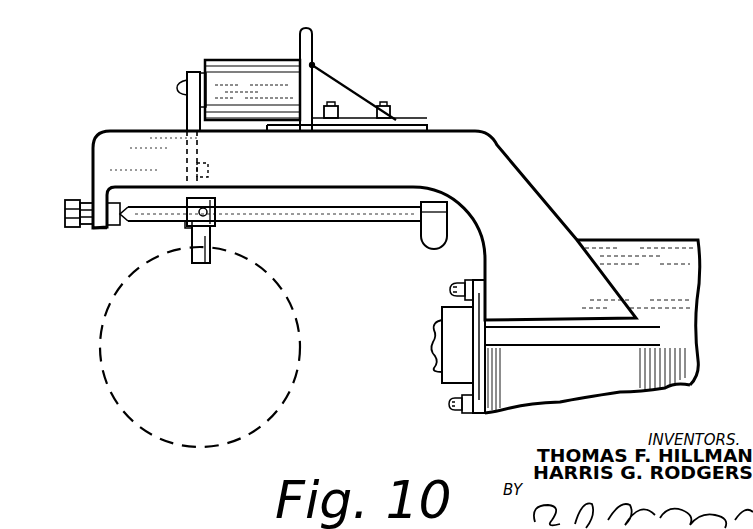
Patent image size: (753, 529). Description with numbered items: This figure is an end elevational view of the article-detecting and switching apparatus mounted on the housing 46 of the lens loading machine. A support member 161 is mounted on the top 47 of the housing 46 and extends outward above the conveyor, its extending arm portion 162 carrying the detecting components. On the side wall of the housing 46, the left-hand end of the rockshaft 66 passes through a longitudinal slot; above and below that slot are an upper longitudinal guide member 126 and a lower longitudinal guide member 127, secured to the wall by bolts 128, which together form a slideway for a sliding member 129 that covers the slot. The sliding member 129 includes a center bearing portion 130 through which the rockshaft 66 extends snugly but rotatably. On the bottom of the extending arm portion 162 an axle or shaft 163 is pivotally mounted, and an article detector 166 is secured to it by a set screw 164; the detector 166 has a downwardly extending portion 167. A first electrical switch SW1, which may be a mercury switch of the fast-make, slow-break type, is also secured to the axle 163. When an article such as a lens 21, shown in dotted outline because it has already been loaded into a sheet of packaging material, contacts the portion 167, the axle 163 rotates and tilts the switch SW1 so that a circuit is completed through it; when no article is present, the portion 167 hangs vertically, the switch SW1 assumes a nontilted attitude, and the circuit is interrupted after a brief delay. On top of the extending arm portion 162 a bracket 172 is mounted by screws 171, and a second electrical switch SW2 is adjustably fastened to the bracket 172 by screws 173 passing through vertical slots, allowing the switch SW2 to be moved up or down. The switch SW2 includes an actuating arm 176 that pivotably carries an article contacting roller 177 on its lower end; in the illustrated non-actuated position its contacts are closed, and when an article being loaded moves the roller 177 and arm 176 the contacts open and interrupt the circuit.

The extending arm portion 162 is at (139, 133).
The actuating arm 176 is at (192, 70).
The second electrical switch SW2 is at (250, 59).
The screws 173 is at (314, 64).
The bracket 172 is at (340, 88).
The screws 171 is at (385, 106).
The article contacting roller 177 is at (210, 168).
The article detector 166 is at (185, 226).
The set screw 164 is at (216, 223).
The axle or shaft 163 is at (333, 222).
The downwardly extending portion 167 is at (206, 264).
The first electrical switch SW1 is at (430, 249).
The support member 161 is at (535, 255).
The upper longitudinal guide member 126 is at (469, 286).
The top 47 is at (670, 294).
The rockshaft 66 is at (433, 343).
The center bearing portion 130 is at (451, 375).
The sliding member 129 is at (477, 375).
The bolts 128 is at (451, 407).
The lower longitudinal guide member 127 is at (467, 414).
The housing 46 is at (677, 390).
The lens 21 is at (265, 421).